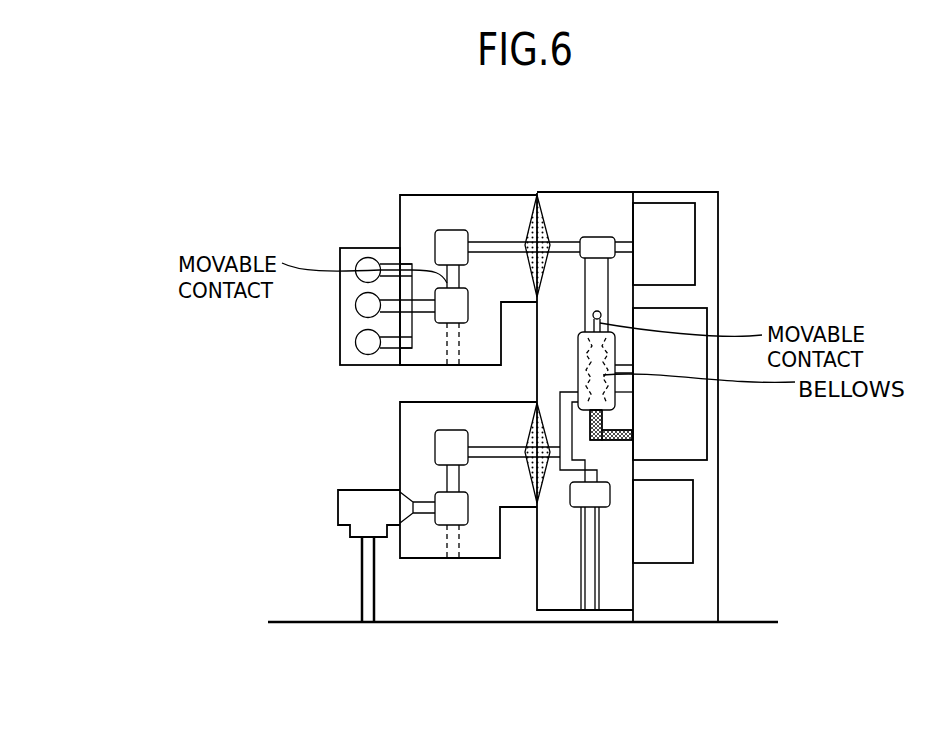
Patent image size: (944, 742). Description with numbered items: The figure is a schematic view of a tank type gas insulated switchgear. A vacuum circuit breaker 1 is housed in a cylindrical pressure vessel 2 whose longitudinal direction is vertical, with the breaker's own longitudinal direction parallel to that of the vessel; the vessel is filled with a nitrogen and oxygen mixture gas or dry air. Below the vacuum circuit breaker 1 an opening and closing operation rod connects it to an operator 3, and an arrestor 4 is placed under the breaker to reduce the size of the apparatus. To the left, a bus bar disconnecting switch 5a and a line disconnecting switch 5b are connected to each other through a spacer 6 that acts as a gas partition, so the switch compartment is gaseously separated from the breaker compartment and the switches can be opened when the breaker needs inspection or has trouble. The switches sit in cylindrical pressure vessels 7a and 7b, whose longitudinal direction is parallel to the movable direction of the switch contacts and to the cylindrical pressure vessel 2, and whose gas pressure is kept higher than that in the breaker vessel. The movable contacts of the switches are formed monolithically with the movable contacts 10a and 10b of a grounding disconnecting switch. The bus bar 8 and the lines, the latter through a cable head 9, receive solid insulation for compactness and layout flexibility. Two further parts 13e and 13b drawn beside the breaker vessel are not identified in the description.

The vacuum circuit breaker 1 is at (603, 298).
The cylindrical pressure vessel 2 is at (592, 200).
The operator 3 is at (695, 402).
The arrestor 4 is at (578, 583).
The bus bar disconnecting switch 5a is at (450, 236).
The line disconnecting switch 5b is at (435, 447).
The spacer 6 is at (527, 220).
The cylindrical pressure vessel 7a is at (415, 194).
The cylindrical pressure vessel 7b is at (400, 403).
The bus bar 8 is at (356, 342).
The cable head 9 is at (348, 508).
The movable contact of grounding disconnecting switch 10a is at (443, 348).
The movable contact of grounding disconnecting switch 10b is at (445, 540).
The upper electrode block 13e is at (688, 228).
The lower electrode block 13b is at (687, 522).